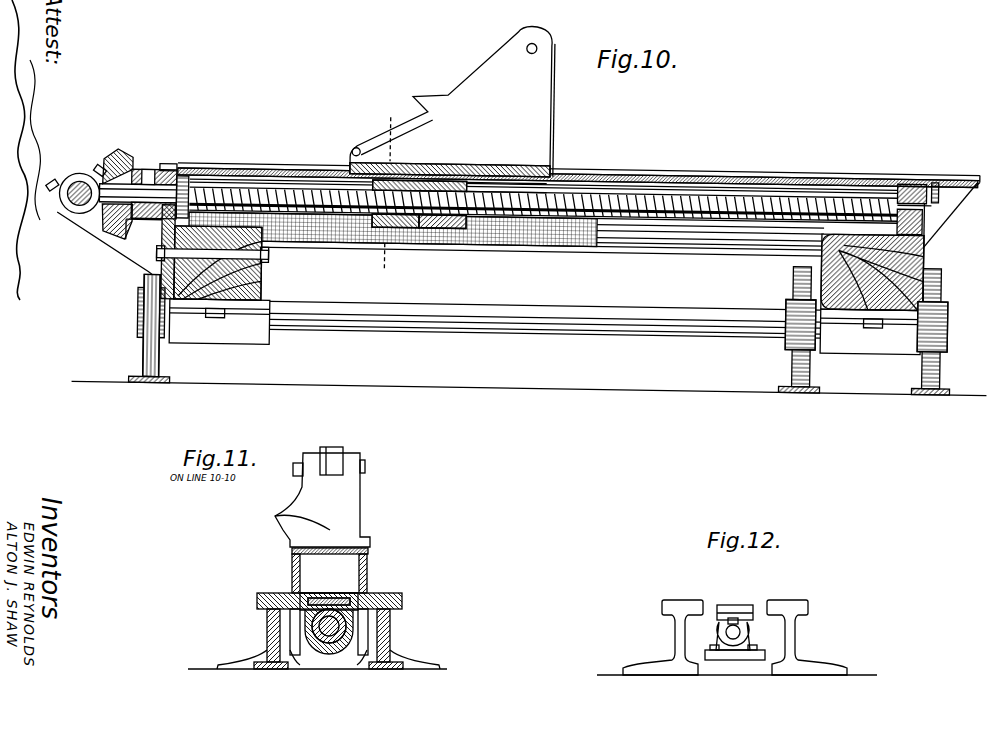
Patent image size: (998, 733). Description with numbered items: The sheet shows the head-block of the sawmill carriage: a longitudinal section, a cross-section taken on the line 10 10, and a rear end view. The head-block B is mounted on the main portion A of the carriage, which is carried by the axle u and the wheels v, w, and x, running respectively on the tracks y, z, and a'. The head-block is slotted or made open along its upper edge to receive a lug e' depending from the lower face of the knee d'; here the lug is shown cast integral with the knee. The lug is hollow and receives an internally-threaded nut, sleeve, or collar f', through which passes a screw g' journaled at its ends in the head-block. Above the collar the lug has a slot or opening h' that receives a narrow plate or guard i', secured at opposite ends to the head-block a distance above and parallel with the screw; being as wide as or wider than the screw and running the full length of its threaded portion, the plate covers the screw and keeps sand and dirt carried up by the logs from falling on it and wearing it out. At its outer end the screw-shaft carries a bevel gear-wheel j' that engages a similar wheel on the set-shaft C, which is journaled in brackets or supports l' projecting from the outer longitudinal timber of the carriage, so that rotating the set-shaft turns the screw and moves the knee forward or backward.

In FIG. 10, the set-shaft C is at (80, 188).
In FIG. 10, the bevel gear-wheel j' is at (121, 182).
In FIG. 10, the plate or guard i' is at (578, 163).
In FIG. 11, the plate or guard i' is at (327, 585).
In FIG. 12, the plate or guard i' is at (738, 603).
In FIG. 10, the head-block B is at (975, 209).
In FIG. 11, the head-block B is at (328, 631).
In FIG. 12, the head-block B is at (645, 626).
In FIG. 10, the screw g' is at (543, 177).
In FIG. 11, the screw g' is at (310, 656).
In FIG. 12, the screw g' is at (735, 660).
In FIG. 10, the knee d' is at (452, 100).
In FIG. 11, the knee d' is at (334, 520).
In FIG. 10, the slot or opening h' is at (531, 159).
In FIG. 11, the slot or opening h' is at (329, 585).
In FIG. 10, the bracket or support l' is at (115, 251).
In FIG. 10, the main portion of the carriage A is at (264, 276).
In FIG. 10, the nut, sleeve, or collar f' is at (418, 224).
In FIG. 11, the nut, sleeve, or collar f' is at (327, 653).
In FIG. 10, the lug e' is at (442, 242).
In FIG. 11, the lug e' is at (332, 645).
In FIG. 10, the axle u is at (520, 300).
In FIG. 10, the wheel v is at (163, 360).
In FIG. 10, the track y is at (158, 383).
In FIG. 10, the wheel w is at (795, 353).
In FIG. 10, the wheel x is at (925, 360).
In FIG. 10, the track z is at (803, 383).
In FIG. 10, the track a' is at (928, 404).
In FIG. 10, the section line 10 10 is at (385, 193).